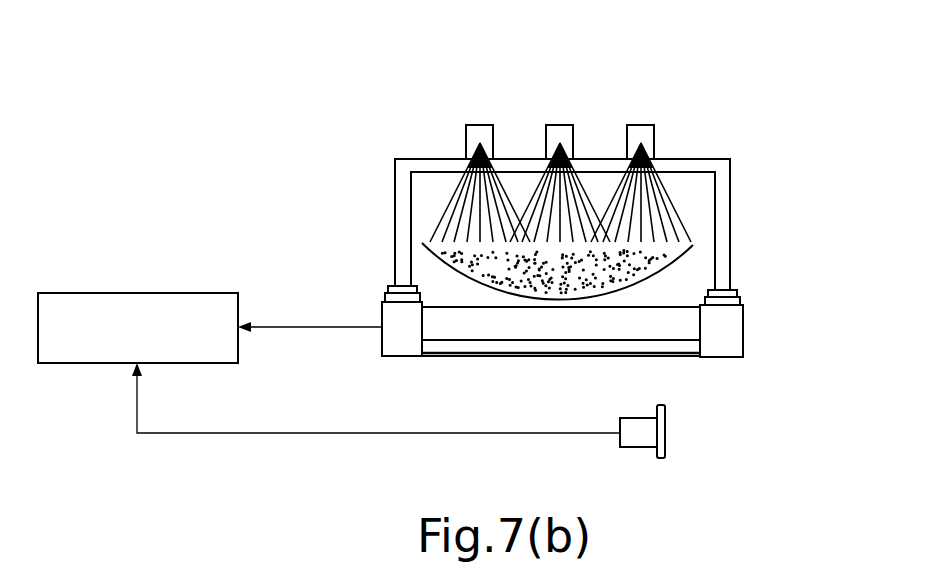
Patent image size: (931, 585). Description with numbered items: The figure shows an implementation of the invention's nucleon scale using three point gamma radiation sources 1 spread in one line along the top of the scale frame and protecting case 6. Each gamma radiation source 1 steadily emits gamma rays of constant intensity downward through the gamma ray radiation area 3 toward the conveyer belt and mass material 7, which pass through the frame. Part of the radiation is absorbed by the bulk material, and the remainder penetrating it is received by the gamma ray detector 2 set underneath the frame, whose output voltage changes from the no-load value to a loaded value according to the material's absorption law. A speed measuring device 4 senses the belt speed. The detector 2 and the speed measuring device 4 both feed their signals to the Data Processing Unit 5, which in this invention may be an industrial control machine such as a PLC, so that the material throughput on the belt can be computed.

The gamma radiation source 1 is at (655, 125).
The gamma ray detector 2 is at (660, 323).
The gamma ray radiation area 3 is at (687, 283).
The speed measuring device 4 is at (665, 447).
The Data Processing Unit (DPU) 5 is at (83, 302).
The scale frame and protecting case 6 is at (717, 193).
The conveyer belt and mass material 7 is at (693, 245).